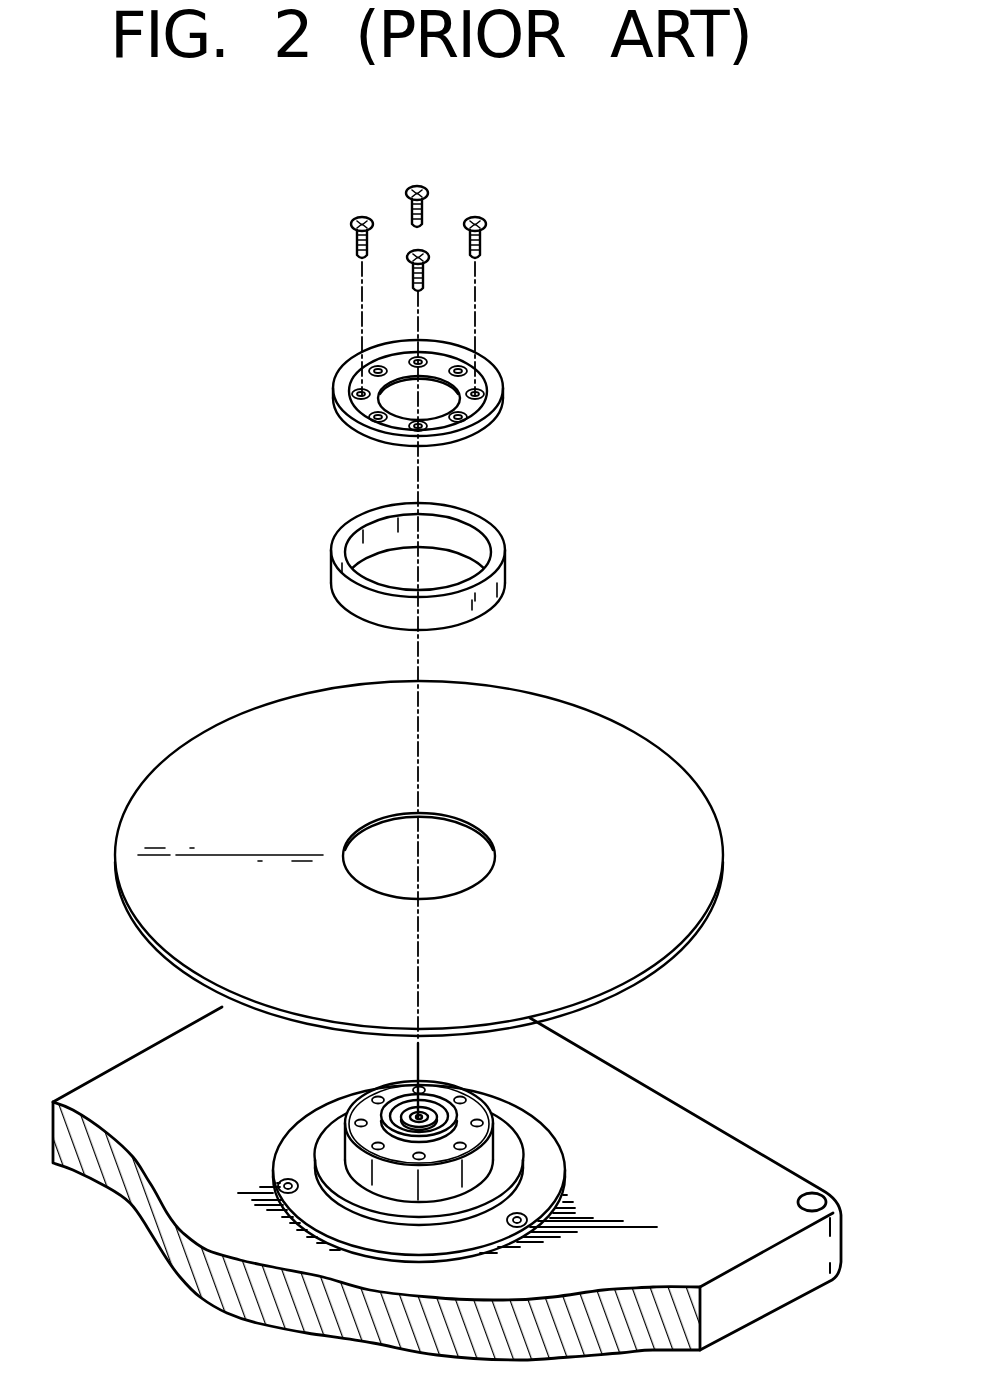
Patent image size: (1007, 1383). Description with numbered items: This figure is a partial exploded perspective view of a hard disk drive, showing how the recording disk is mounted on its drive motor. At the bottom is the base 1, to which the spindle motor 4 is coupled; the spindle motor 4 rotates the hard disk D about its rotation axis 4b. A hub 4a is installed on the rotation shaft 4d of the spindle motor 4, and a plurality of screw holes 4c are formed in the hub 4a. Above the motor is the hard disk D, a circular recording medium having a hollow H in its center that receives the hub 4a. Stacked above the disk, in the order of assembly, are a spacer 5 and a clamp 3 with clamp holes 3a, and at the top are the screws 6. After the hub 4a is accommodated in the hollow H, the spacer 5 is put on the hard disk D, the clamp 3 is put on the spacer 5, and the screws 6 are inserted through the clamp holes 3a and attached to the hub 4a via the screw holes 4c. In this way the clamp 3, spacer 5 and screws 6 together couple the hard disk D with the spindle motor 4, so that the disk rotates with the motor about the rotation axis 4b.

The base 1 is at (727, 1158).
The clamp 3 is at (329, 380).
The clamp holes 3a is at (483, 394).
The spindle motor 4 is at (494, 1113).
The hub 4a is at (478, 1138).
The rotation axis 4b is at (427, 1060).
The screw holes 4c is at (360, 1120).
The rotation shaft 4d is at (393, 1092).
The spacer 5 is at (500, 550).
The screws 6 is at (429, 190).
The hard disk D is at (639, 755).
The hollow H is at (459, 855).